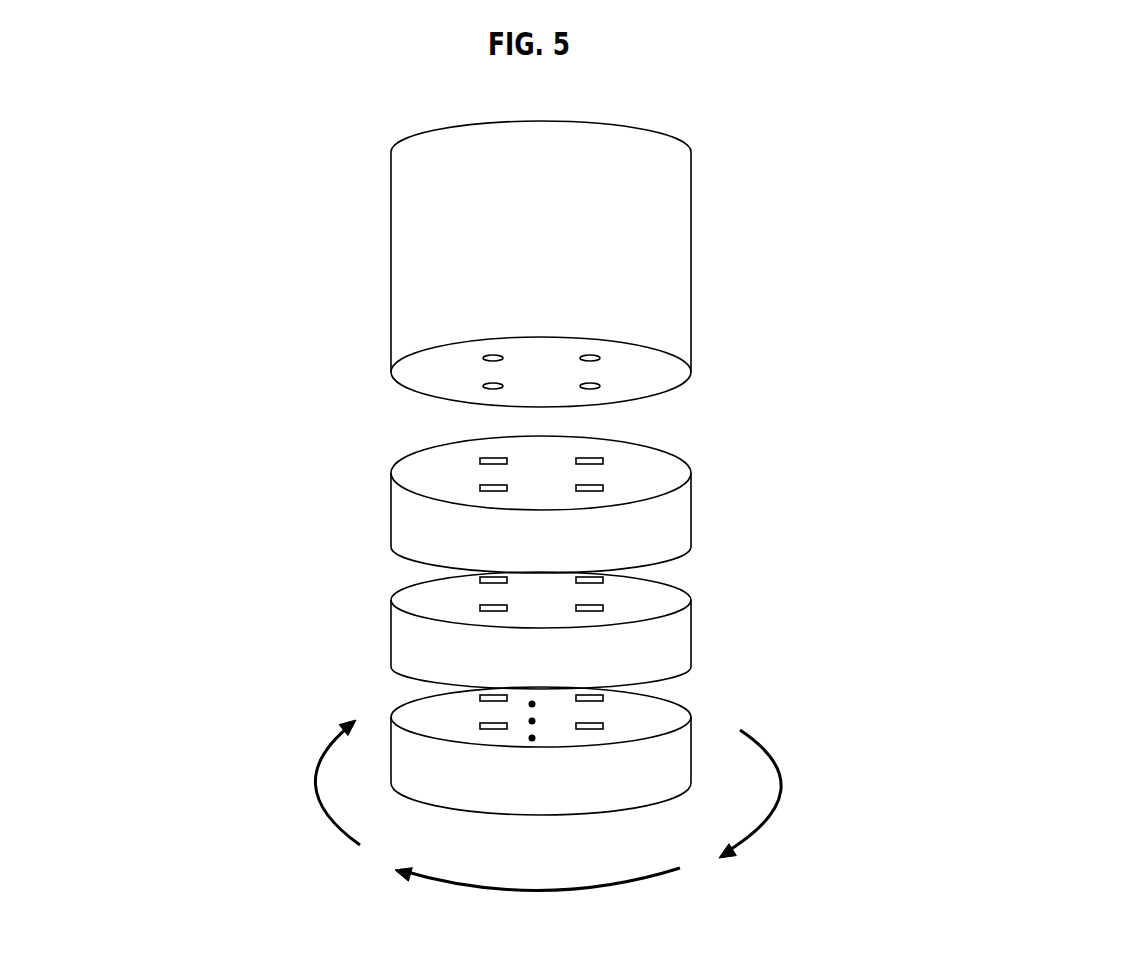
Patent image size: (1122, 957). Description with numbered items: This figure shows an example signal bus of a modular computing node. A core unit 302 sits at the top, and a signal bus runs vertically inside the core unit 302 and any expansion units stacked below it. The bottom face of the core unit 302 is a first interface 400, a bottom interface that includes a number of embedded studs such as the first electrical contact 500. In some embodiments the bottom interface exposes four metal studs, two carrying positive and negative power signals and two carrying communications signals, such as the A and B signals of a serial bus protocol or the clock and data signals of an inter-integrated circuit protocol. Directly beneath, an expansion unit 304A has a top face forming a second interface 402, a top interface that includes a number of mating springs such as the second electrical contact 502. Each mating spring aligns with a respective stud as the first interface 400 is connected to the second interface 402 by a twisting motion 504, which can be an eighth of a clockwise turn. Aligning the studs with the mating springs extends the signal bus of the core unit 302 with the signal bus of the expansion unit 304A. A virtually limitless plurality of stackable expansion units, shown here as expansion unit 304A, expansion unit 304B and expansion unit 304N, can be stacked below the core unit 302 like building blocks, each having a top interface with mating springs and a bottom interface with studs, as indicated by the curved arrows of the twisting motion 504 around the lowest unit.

The core unit 302 is at (610, 250).
The first interface 400 is at (443, 371).
The first electrical contact 500 is at (600, 359).
The expansion unit 304A is at (650, 556).
The second interface 402 is at (430, 475).
The second electrical contact 502 is at (598, 483).
The expansion unit 304B is at (640, 666).
The expansion unit 304N is at (645, 791).
The twisting motion 504 is at (661, 805).